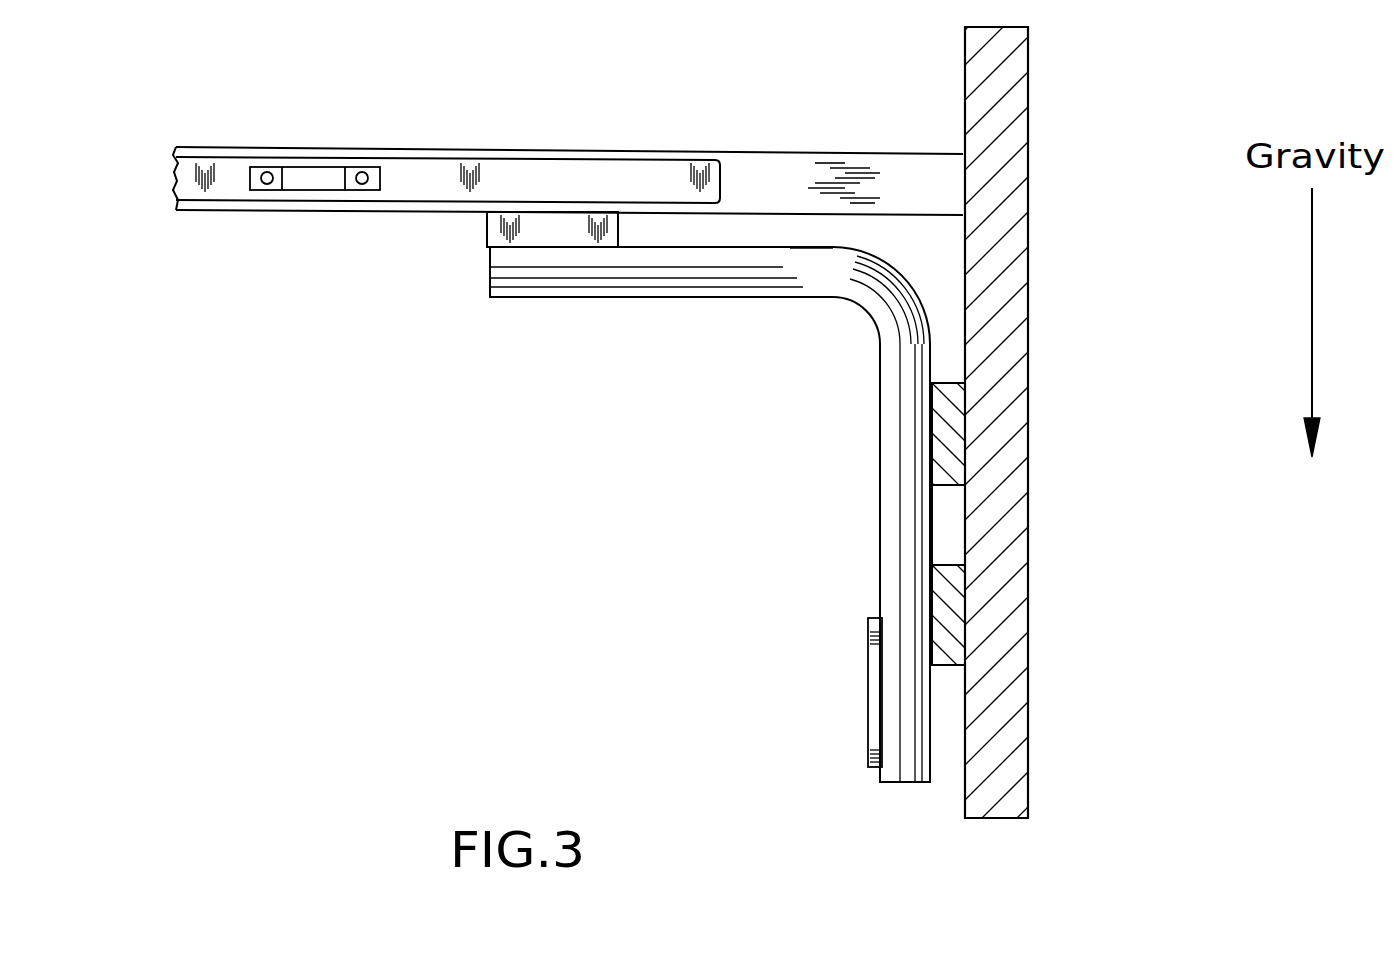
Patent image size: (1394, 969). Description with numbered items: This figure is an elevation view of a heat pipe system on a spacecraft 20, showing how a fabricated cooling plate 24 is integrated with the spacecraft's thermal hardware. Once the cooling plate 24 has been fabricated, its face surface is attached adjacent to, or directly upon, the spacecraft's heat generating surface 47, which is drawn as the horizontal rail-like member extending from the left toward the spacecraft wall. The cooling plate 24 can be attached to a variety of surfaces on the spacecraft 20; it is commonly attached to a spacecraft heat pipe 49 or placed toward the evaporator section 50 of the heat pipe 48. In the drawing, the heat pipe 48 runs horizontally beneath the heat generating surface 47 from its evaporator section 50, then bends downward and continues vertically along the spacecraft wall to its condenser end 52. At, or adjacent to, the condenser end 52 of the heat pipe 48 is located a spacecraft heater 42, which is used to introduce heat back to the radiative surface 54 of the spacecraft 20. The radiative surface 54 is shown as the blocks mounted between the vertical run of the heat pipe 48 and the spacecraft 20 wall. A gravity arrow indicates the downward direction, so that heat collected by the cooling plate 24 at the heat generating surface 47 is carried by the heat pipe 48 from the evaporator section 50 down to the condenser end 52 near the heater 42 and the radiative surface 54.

The spacecraft 20 is at (963, 108).
The cooling plate 24 is at (303, 165).
The heat generating surface 47 is at (440, 147).
The heat pipe 49 is at (653, 178).
The evaporator section 50 is at (490, 276).
The heat pipe 48 is at (800, 300).
The condenser end 52 is at (880, 470).
The radiative surface 54 is at (1030, 457).
The spacecraft heater 42 is at (870, 698).